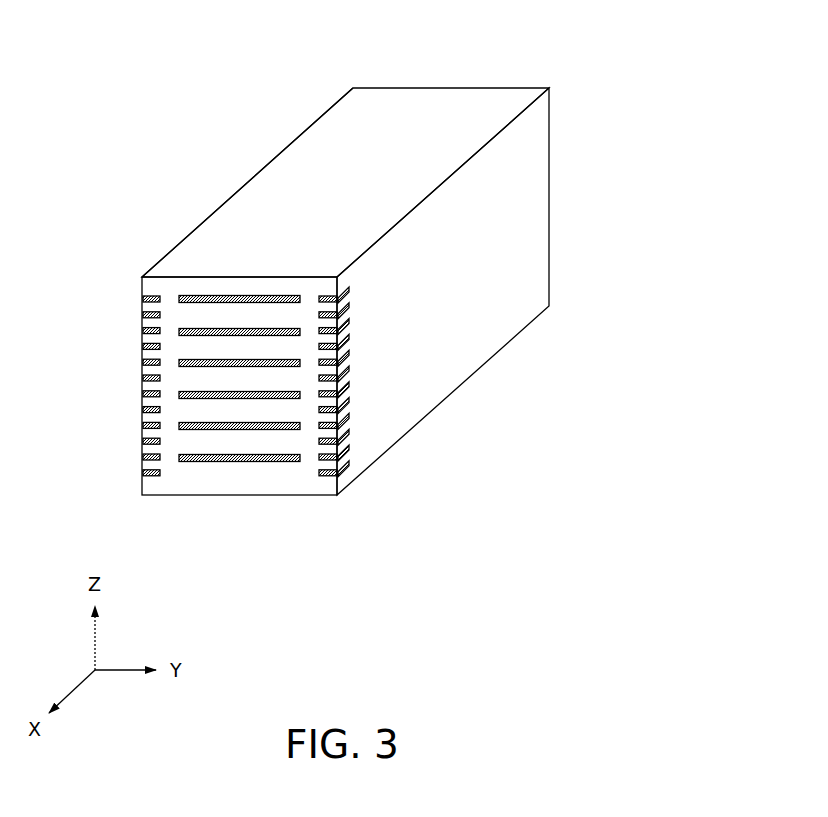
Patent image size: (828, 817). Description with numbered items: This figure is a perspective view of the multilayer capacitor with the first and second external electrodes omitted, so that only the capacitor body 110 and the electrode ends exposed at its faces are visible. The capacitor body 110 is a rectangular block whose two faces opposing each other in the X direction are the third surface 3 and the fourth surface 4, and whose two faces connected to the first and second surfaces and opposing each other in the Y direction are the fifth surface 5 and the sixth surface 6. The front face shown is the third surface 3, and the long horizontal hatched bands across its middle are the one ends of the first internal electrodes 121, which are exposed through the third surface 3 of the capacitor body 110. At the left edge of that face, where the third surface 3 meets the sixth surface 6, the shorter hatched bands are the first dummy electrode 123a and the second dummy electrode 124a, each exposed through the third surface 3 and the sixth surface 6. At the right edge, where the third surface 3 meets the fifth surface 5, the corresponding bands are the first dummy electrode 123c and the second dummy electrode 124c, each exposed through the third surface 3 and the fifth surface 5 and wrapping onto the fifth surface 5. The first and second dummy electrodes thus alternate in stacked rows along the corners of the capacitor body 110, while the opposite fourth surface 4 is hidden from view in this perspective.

The third surface 3 is at (186, 407).
The fourth surface 4 is at (427, 107).
The fifth surface 5 is at (521, 248).
The sixth surface 6 is at (370, 257).
The capacitor body 110 is at (240, 225).
The first internal electrode 121 is at (195, 300).
The 1-1 dummy electrode 123a is at (142, 300).
The 2-1 dummy electrode 124a is at (142, 316).
The 1-3 dummy electrode 123c is at (341, 291).
The 2-3 dummy electrode 124c is at (339, 320).